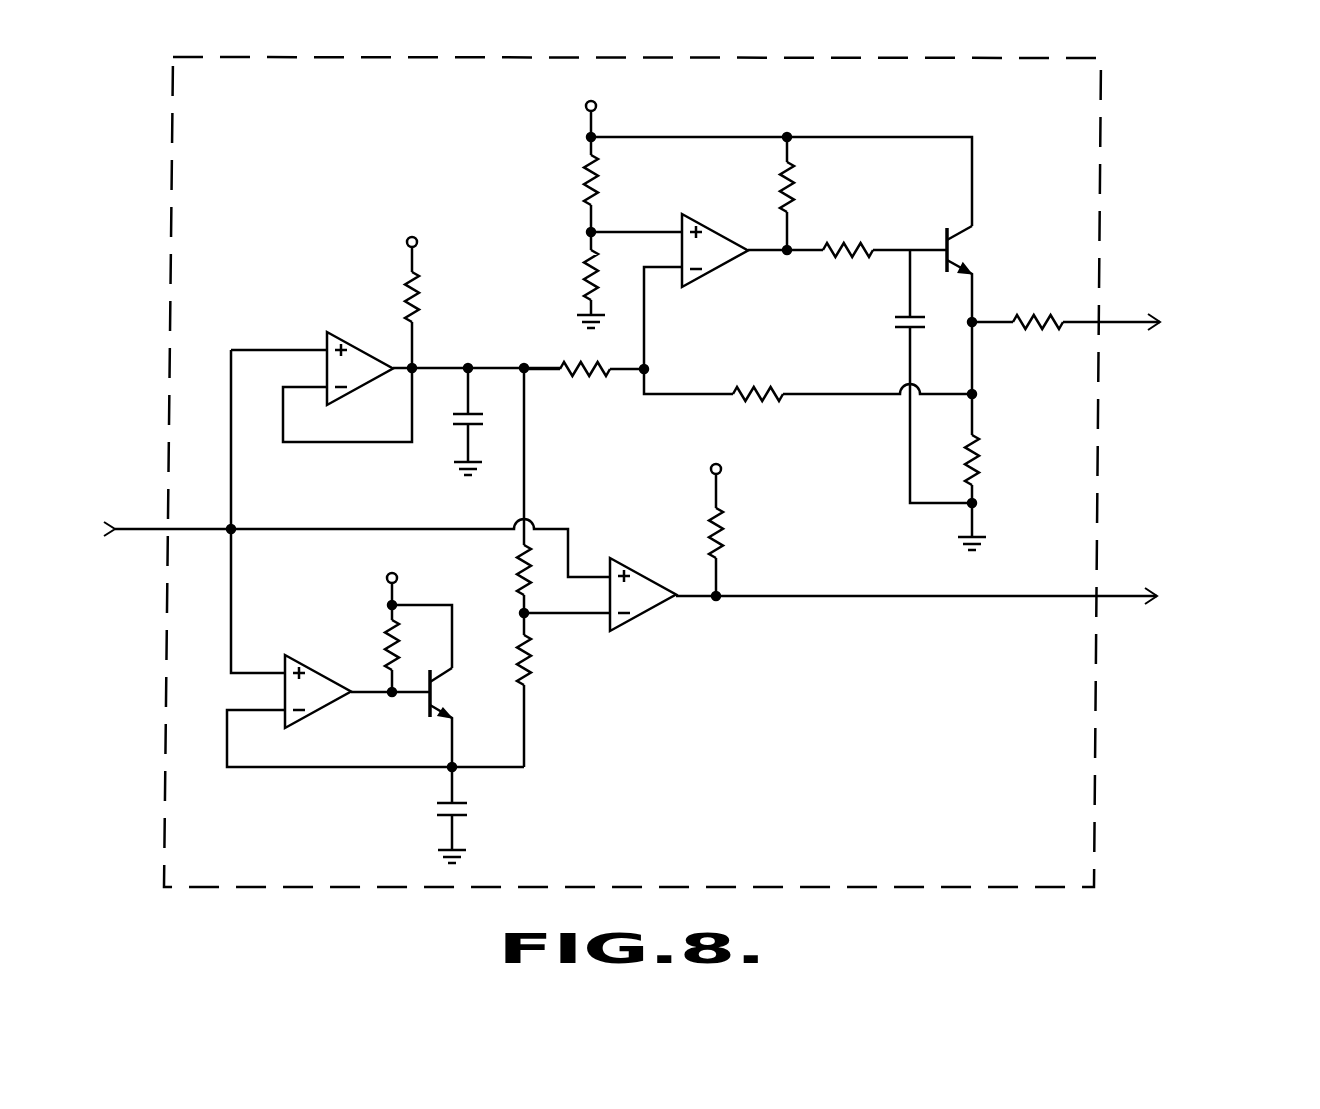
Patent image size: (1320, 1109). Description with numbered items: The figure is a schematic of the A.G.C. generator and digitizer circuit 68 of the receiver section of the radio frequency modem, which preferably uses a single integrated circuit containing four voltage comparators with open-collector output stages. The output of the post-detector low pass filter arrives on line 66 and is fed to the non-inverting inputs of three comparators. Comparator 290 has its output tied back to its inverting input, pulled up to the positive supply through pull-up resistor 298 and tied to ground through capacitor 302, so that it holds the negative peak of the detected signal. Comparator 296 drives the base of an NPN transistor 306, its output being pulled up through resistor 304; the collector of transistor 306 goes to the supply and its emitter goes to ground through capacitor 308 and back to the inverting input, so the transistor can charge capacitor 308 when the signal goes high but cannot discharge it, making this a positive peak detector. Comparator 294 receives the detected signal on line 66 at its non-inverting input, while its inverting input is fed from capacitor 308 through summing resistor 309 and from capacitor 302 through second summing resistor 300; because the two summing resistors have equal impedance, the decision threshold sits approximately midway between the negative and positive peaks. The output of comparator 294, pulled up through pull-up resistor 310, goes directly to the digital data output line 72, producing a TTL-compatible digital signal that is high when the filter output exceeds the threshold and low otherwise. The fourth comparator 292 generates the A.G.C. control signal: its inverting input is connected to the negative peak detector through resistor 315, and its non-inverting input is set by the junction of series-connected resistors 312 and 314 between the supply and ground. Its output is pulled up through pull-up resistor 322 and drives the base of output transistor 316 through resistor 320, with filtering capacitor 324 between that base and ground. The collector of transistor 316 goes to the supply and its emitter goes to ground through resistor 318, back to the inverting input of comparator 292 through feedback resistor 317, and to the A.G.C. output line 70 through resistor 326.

The line 66 is at (150, 533).
The A.G.C. generator and digitizer circuit 68 is at (1096, 782).
The output line 70 is at (1118, 326).
The digital data output line 72 is at (1115, 600).
The comparator 290 is at (372, 340).
The voltage comparator 292 is at (706, 216).
The voltage comparator circuit 294 is at (638, 548).
The comparator circuit 296 is at (320, 644).
The pull-up resistor 298 is at (419, 299).
The second summing resistor 300 is at (516, 570).
The capacitor 302 is at (453, 432).
The resistor 304 is at (384, 628).
The NPN transistor 306 is at (446, 697).
The capacitor 308 is at (470, 812).
The summing resistor 309 is at (532, 684).
The pull-up resistor 310 is at (725, 533).
The resistor 312 is at (585, 178).
The resistor 314 is at (585, 268).
The resistor 315 is at (590, 377).
The output transistor 316 is at (968, 247).
The feedback resistor 317 is at (764, 388).
The resistor 318 is at (976, 458).
The resistor 320 is at (846, 245).
The pull-up resistor 322 is at (793, 180).
The filtering capacitor 324 is at (888, 323).
The resistor 326 is at (1038, 316).